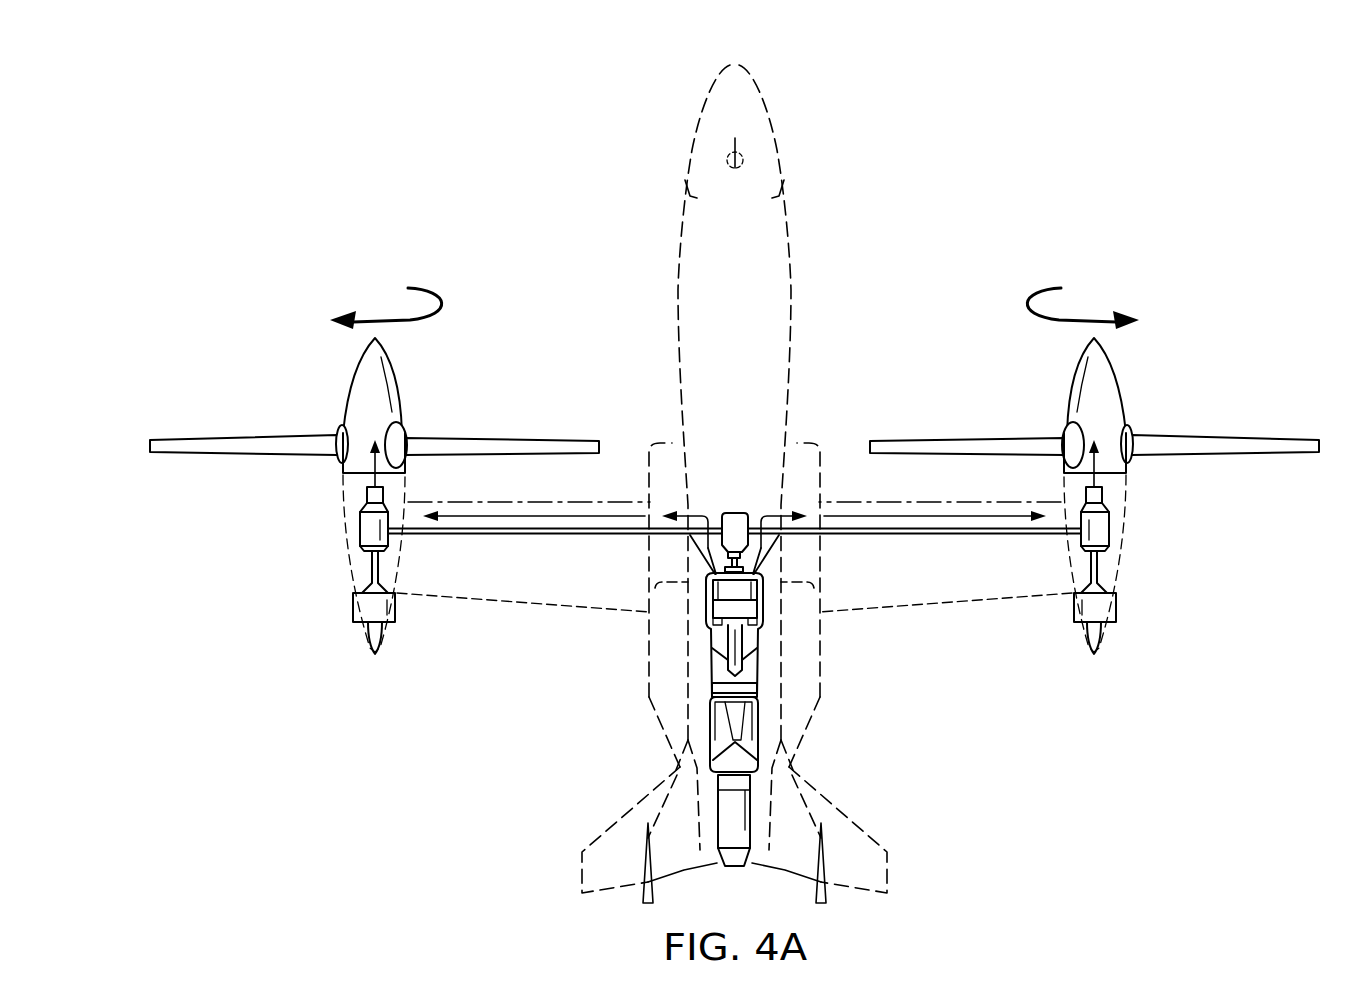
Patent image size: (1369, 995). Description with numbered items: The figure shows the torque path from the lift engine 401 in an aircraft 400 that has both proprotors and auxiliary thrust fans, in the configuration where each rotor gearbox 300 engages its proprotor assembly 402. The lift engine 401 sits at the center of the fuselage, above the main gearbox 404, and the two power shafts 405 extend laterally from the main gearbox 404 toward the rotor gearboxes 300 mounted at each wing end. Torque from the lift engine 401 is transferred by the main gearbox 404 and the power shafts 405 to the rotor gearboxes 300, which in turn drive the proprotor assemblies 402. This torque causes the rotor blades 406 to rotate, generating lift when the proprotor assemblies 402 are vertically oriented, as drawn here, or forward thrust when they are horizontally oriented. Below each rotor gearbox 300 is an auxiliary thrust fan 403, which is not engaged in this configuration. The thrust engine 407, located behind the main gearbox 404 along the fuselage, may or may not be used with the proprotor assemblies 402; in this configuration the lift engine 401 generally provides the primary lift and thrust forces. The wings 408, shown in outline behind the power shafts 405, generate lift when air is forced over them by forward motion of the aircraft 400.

The aircraft 400 is at (918, 100).
The lift engine 401 is at (733, 512).
The proprotor assembly 402 is at (335, 385).
The auxiliary thrust fan 403 is at (370, 607).
The main gearbox 404 is at (735, 610).
The power shaft 405 is at (520, 537).
The rotor blade 406 is at (243, 455).
The thrust engine 407 is at (748, 710).
The wing 408 is at (530, 610).
The rotor gearbox 300 is at (348, 533).